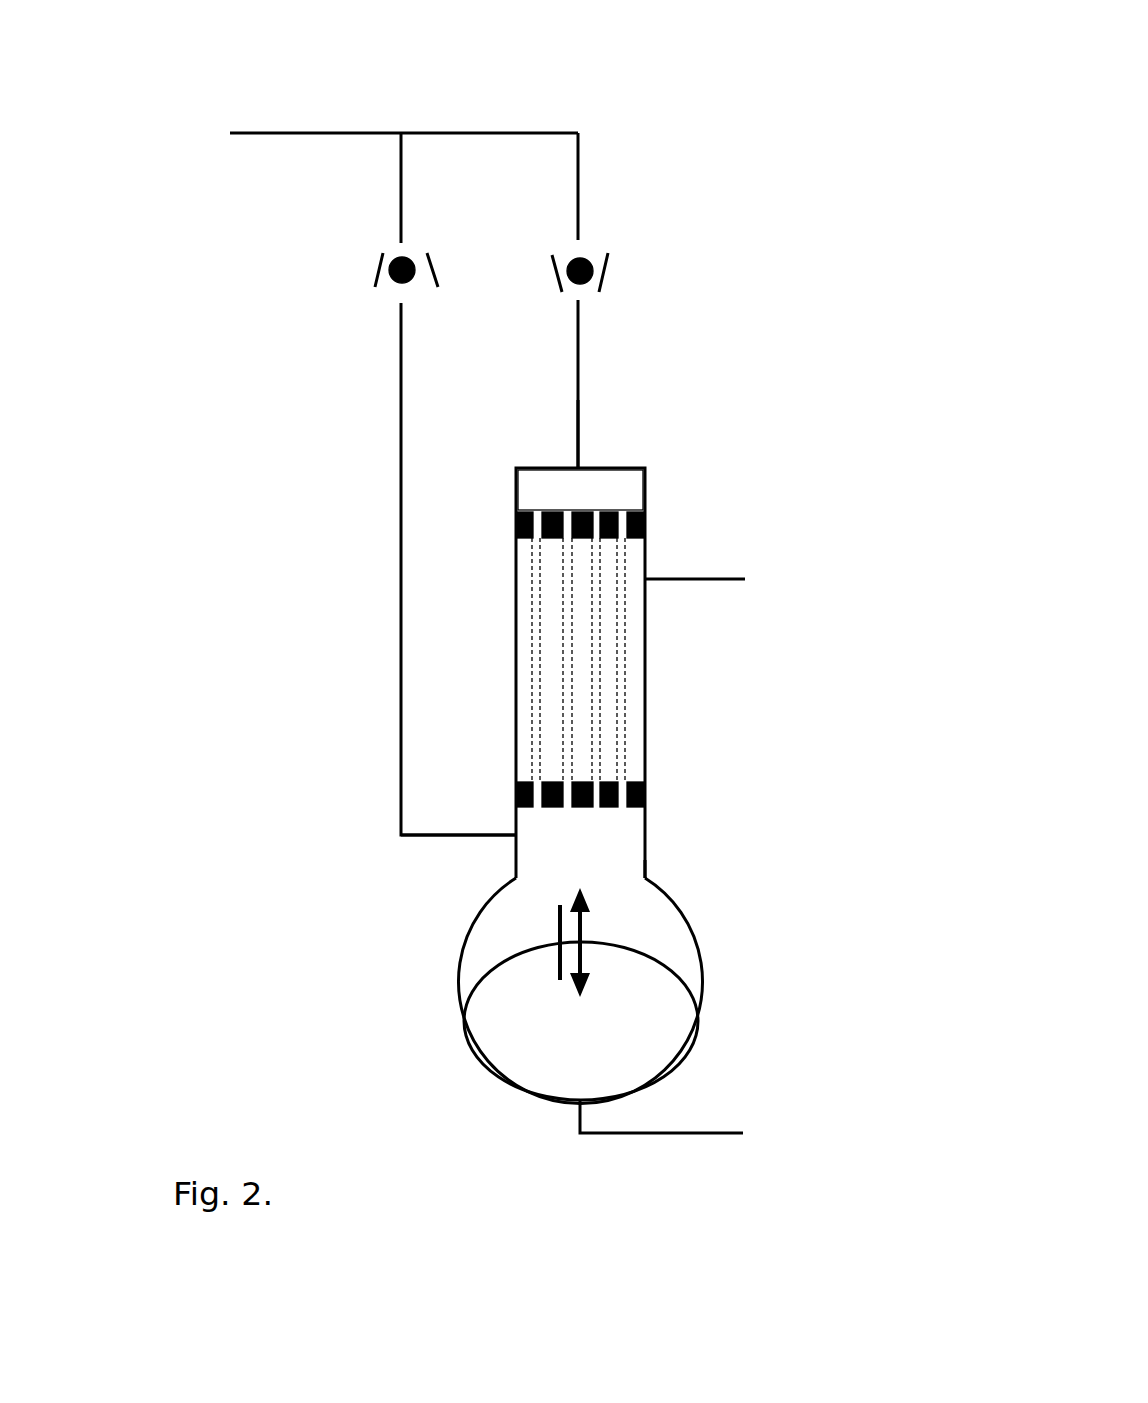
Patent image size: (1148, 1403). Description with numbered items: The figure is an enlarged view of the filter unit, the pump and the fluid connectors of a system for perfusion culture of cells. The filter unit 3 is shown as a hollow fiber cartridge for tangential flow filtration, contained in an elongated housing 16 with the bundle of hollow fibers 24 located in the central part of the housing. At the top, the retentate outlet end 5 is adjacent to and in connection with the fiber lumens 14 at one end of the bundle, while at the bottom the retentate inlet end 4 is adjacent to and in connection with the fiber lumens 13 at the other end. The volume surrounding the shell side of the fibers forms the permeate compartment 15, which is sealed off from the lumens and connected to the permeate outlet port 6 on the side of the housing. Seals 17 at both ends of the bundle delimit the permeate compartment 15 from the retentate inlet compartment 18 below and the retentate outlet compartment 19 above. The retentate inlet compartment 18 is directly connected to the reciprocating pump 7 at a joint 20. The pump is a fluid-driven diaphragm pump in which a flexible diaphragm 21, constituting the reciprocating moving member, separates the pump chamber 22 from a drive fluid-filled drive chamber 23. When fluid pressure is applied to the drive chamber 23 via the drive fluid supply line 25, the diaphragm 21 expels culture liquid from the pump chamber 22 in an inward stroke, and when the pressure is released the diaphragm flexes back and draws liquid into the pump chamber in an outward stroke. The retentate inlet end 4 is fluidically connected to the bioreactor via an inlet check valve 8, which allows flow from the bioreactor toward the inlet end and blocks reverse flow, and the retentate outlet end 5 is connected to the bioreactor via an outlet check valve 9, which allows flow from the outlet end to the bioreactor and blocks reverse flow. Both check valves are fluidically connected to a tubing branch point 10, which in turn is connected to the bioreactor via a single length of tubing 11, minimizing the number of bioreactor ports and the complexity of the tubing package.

The filter unit 3 is at (645, 707).
The retentate inlet end 4 is at (515, 837).
The retentate outlet end 5 is at (580, 468).
The permeate outlet port 6 is at (677, 579).
The reciprocating pump 7 is at (452, 980).
The inlet check valve 8 is at (402, 283).
The outlet check valve 9 is at (583, 258).
The tubing branch point 10 is at (402, 133).
The length of tubing 11 is at (307, 133).
The fiber lumens 13 is at (562, 808).
The fiber lumens 14 is at (568, 508).
The permeate compartment 15 is at (633, 630).
The housing 16 is at (516, 603).
The seals 17 is at (615, 517).
The retentate inlet compartment 18 is at (588, 838).
The retentate outlet compartment 19 is at (532, 493).
The joint 20 is at (647, 877).
The diaphragm 21 is at (537, 948).
The pump chamber 22 is at (643, 912).
The drive chamber 23 is at (540, 1035).
The hollow fibers 24 is at (625, 728).
The drive fluid supply line 25 is at (707, 1133).